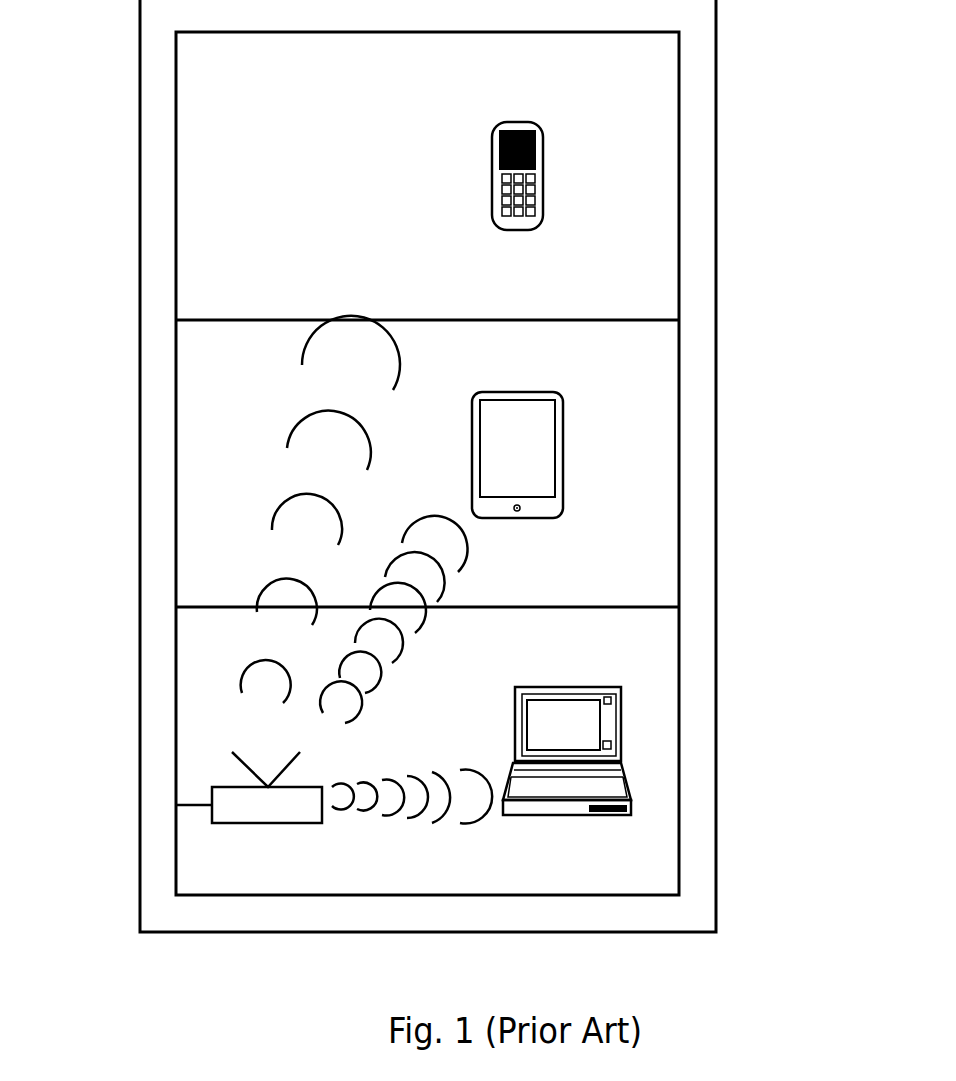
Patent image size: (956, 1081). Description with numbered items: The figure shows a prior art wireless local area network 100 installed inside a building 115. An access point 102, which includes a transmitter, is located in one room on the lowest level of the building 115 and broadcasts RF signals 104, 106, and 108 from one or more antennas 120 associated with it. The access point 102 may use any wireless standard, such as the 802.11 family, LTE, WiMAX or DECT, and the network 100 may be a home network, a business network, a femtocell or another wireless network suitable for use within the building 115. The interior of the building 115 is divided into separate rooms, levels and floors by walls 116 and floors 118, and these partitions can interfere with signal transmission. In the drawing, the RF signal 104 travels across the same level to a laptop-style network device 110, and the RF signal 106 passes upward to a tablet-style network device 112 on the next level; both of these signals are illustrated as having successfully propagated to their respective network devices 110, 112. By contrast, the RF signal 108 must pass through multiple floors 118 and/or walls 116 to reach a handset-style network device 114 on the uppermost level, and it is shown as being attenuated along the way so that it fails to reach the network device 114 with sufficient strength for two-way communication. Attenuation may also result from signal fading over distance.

The wireless local area network 100 is at (540, 572).
The access point 102 is at (265, 824).
The RF signal 104 is at (407, 776).
The RF signal 106 is at (425, 522).
The RF signal 108 is at (322, 340).
The network device 110 is at (622, 750).
The network device 112 is at (564, 454).
The network device 114 is at (544, 172).
The building 115 is at (140, 465).
The walls 116 is at (680, 173).
The floors 118 is at (547, 320).
The antennas 120 is at (255, 772).